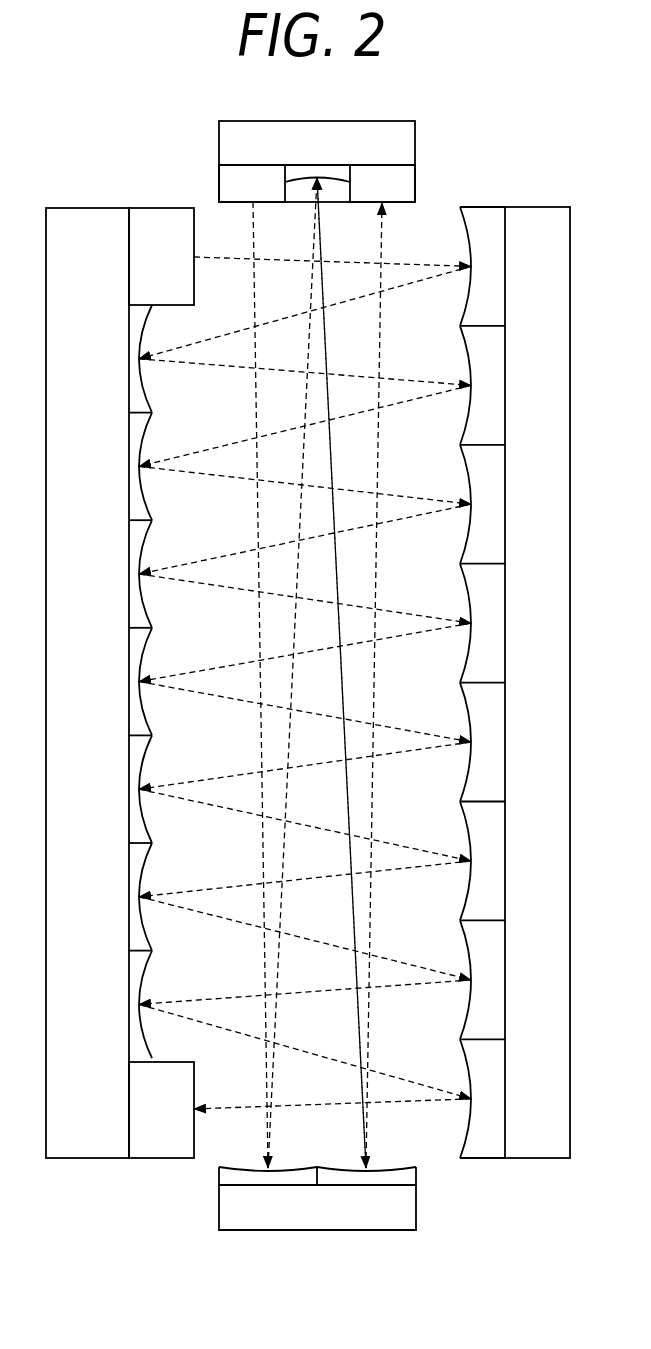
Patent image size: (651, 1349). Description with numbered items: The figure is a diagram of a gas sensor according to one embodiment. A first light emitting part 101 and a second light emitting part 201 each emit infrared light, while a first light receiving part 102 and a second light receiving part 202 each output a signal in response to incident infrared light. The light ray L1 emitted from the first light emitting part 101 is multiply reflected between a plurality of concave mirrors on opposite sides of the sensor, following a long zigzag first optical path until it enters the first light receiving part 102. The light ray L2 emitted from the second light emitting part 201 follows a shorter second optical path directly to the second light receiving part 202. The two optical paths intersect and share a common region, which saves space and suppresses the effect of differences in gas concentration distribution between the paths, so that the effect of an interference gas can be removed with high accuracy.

The first light emitting part 101 is at (157, 225).
The first light receiving part 102 is at (158, 1137).
The second light emitting part 201 is at (232, 187).
The second light receiving part 202 is at (400, 180).
The light ray L1 is at (432, 1100).
The light ray L2 is at (383, 240).